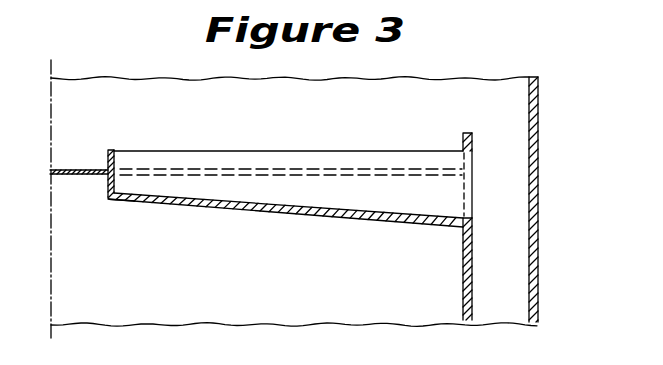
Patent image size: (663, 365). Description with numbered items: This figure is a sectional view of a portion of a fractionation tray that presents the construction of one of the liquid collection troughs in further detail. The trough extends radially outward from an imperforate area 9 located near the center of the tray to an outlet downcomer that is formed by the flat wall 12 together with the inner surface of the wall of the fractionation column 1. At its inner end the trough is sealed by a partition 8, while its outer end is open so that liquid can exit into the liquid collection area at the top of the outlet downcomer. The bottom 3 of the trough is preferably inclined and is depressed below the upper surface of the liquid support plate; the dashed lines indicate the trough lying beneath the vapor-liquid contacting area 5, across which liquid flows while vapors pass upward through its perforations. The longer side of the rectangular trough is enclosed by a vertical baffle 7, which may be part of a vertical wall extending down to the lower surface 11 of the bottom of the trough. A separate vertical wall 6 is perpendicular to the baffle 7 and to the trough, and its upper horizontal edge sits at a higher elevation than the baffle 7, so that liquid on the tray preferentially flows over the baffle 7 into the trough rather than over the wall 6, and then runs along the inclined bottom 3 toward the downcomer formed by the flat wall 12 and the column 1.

The fractionation column 1 is at (539, 198).
The bottom of the trough 3 is at (463, 225).
The vapor-liquid contacting area 5 is at (383, 175).
The vertical wall 6 is at (467, 132).
The vertical baffle 7 is at (298, 150).
The partition 8 is at (108, 160).
The imperforate area 9 is at (73, 175).
The lower surface of the bottom of the trough 11 is at (128, 200).
The flat wall 12 is at (472, 297).